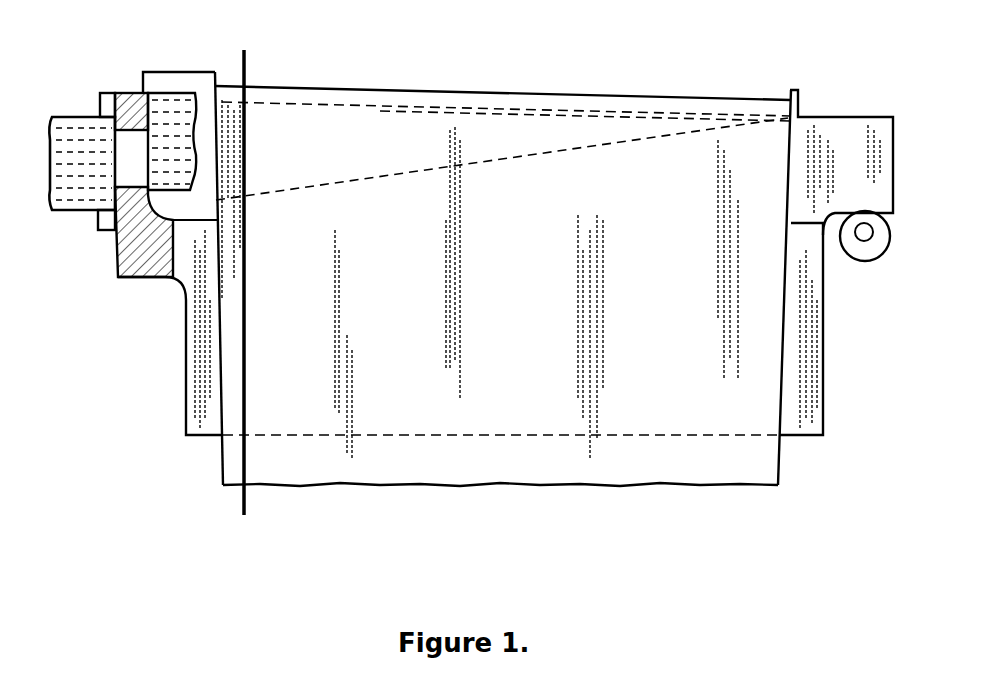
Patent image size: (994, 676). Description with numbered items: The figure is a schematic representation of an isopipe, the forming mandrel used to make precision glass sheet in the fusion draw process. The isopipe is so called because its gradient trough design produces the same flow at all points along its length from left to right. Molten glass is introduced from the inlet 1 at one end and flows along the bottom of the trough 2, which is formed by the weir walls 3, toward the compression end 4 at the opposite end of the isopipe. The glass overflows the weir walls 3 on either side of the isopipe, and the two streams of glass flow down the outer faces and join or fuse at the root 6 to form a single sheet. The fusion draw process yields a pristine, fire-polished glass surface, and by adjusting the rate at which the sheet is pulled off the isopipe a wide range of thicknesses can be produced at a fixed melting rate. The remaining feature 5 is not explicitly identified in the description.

The inlet 1 is at (103, 157).
The trough 2 is at (765, 112).
The weir walls 3 is at (202, 322).
The compression end 4 is at (342, 173).
The top wall 5 is at (517, 117).
The root 6 is at (244, 301).